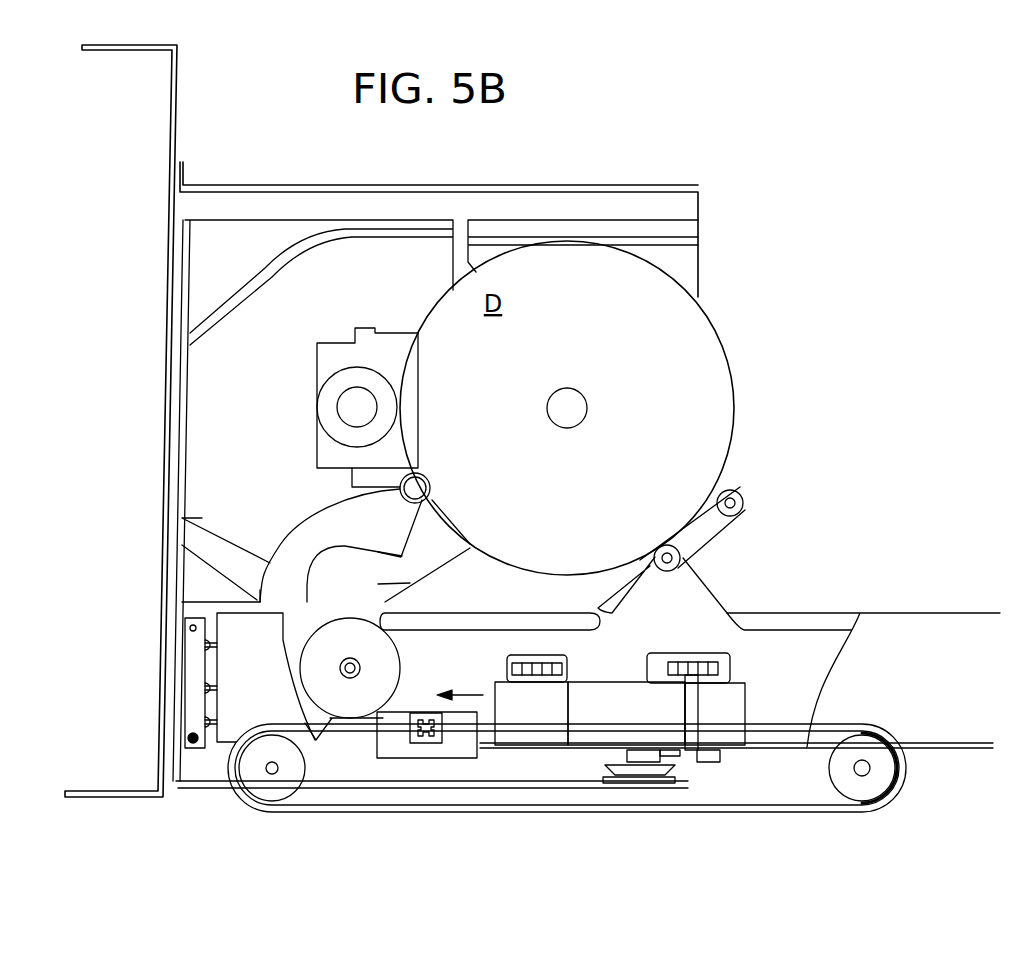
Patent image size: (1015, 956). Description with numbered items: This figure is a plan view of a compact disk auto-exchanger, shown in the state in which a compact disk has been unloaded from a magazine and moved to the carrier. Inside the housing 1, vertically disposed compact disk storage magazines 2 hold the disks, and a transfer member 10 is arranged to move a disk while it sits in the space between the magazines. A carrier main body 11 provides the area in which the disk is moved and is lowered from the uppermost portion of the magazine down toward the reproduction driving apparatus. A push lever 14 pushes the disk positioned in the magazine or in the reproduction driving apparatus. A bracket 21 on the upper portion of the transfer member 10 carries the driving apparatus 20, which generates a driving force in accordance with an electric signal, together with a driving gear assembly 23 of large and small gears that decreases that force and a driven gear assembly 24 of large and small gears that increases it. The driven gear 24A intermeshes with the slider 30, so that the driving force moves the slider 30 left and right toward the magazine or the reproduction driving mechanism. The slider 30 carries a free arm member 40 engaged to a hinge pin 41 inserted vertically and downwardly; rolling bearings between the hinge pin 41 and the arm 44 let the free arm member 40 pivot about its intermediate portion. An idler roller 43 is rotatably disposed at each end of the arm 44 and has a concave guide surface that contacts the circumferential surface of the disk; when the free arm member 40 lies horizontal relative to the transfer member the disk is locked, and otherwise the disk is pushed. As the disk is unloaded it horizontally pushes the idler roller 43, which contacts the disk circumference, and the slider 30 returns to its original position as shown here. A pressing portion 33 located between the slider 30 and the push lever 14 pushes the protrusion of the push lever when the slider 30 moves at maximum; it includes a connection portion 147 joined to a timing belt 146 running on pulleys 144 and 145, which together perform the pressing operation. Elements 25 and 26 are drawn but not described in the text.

The housing 1 is at (157, 254).
The compact disk storage magazine 2 is at (230, 247).
The transfer member 10 is at (735, 238).
The carrier main body 11 is at (686, 263).
The push lever 14 is at (356, 489).
The driving apparatus 20 is at (527, 708).
The bracket 21 is at (745, 707).
The driving gear assembly 23 is at (698, 712).
The driven gear assembly 24 is at (617, 768).
The driven gear 24A is at (710, 662).
The support plate 25 is at (643, 760).
The connecting member 26 is at (700, 740).
The slider 30 is at (758, 668).
The pressing portion 33 is at (425, 745).
The free arm member 40 is at (707, 541).
The hinge pin 41 is at (685, 559).
The idler roller 43 is at (741, 497).
The arm 44 is at (714, 527).
The pulley 144 is at (273, 770).
The pulley 145 is at (873, 771).
The timing belt 146 is at (779, 812).
The connection portion 147 is at (390, 750).